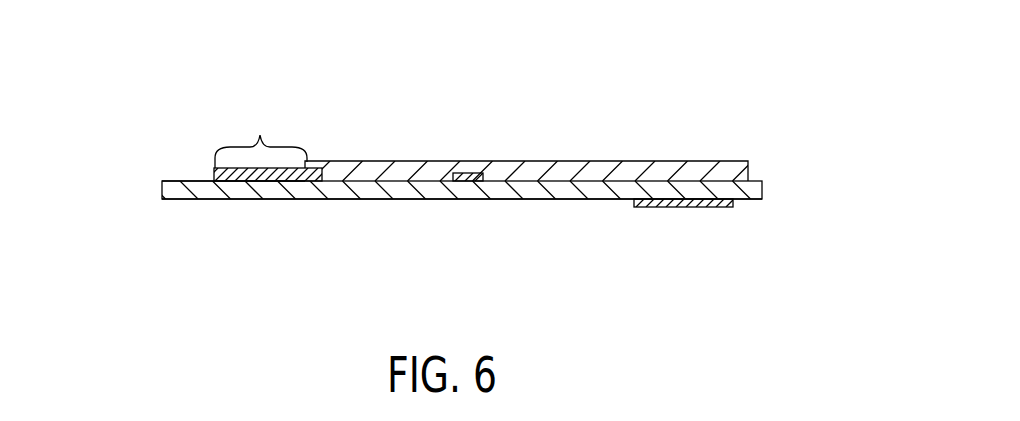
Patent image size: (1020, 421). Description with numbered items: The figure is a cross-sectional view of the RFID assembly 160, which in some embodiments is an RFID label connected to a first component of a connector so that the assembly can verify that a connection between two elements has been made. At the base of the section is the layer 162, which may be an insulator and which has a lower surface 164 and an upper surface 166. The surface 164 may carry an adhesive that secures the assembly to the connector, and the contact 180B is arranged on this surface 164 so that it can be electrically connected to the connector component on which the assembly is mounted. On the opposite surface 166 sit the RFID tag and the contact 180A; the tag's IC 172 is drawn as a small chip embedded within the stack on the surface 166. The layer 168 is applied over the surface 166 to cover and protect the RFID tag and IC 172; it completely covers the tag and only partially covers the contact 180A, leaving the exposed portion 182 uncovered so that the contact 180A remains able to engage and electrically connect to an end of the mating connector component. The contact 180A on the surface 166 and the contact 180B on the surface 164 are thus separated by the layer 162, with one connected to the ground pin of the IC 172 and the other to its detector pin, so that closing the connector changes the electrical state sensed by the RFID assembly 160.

The RFID assembly 160 is at (702, 87).
The layer 162 is at (170, 188).
The surface 164 is at (183, 200).
The surface 166 is at (178, 181).
The layer 168 is at (367, 170).
The IC 172 is at (470, 172).
The contact 180A is at (222, 168).
The contact 180B is at (683, 208).
The exposed portion 182 is at (261, 134).